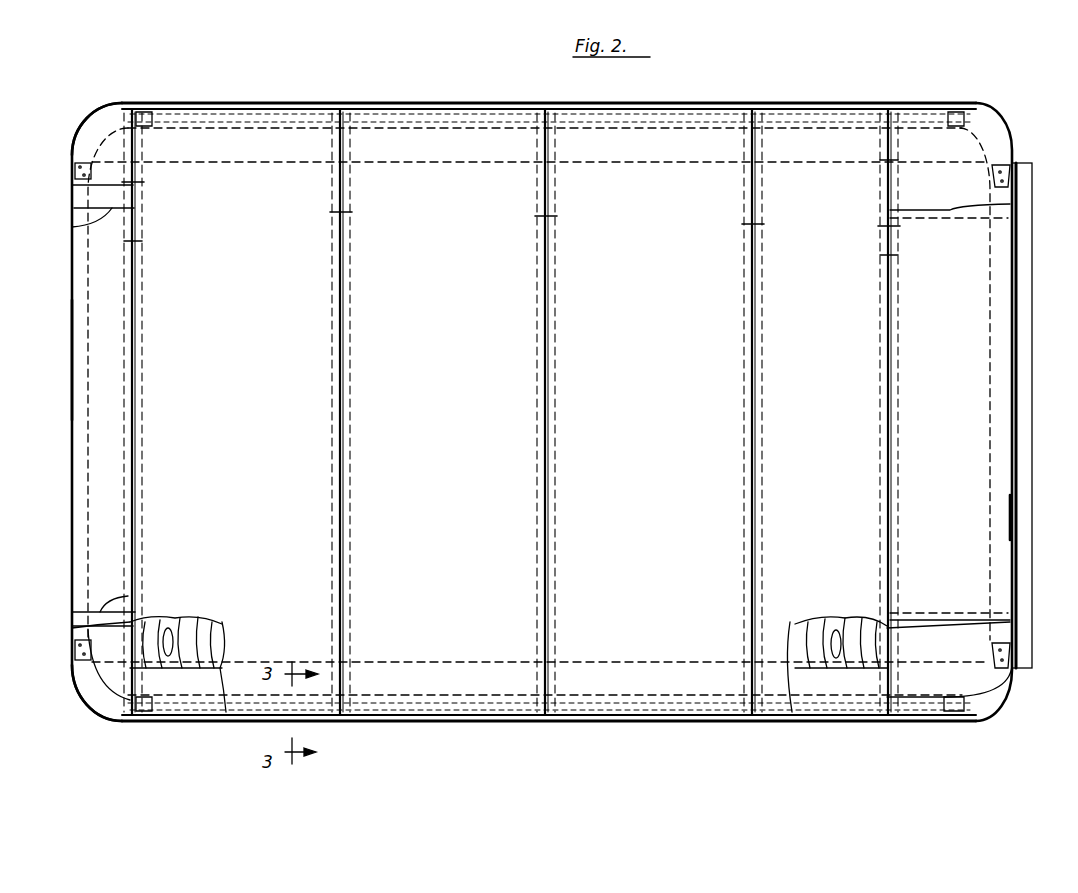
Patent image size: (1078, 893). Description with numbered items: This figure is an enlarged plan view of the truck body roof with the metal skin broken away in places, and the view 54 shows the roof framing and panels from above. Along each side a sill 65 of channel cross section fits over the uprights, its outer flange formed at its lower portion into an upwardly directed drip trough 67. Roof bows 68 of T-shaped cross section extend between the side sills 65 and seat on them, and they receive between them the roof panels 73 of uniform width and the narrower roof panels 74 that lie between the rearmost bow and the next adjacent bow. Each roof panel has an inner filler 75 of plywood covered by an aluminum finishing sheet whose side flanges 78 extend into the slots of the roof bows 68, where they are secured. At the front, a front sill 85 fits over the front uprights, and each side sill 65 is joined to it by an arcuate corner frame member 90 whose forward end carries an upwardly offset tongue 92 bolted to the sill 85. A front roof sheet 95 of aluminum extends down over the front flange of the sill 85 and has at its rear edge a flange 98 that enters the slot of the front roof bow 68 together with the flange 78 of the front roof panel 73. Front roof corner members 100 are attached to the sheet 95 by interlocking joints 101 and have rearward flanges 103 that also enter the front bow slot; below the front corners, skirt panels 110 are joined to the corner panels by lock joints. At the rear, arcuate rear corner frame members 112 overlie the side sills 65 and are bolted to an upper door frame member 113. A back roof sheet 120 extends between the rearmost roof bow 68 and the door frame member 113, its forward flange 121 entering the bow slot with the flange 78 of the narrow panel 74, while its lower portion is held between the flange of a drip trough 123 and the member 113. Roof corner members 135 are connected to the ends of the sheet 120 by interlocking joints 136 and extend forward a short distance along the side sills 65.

The top/bottom rail 54 is at (362, 95).
The sill 65 is at (266, 130).
The drip trough 67 is at (462, 100).
The roof bow 68 is at (346, 252).
The roof panel 73 is at (220, 346).
The roof panel 74 is at (808, 348).
The filler 75 is at (248, 166).
The flange 78 is at (146, 183).
The front sill 85 is at (72, 457).
The corner frame member 90 is at (88, 130).
The tongue 92 is at (74, 652).
The front roof sheet 95 is at (98, 302).
The flange 98 is at (144, 243).
The front roof corner member 100 is at (72, 186).
The interlocking joint 101 is at (72, 227).
The flange 103 is at (134, 193).
The skirt panel 110 is at (890, 172).
The rear corner frame member 112 is at (1000, 126).
The upper door frame member 113 is at (988, 495).
The back roof sheet 120 is at (942, 410).
The flange 121 is at (892, 252).
The drip trough 123 is at (1020, 243).
The roof corner member 135 is at (975, 156).
The interlocking joint 136 is at (1010, 200).